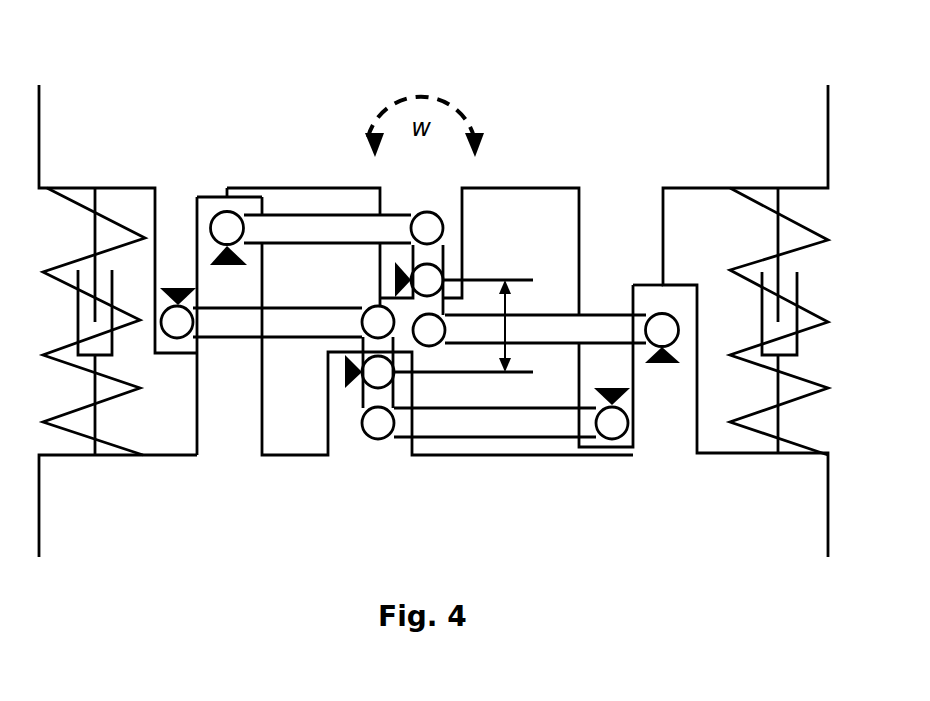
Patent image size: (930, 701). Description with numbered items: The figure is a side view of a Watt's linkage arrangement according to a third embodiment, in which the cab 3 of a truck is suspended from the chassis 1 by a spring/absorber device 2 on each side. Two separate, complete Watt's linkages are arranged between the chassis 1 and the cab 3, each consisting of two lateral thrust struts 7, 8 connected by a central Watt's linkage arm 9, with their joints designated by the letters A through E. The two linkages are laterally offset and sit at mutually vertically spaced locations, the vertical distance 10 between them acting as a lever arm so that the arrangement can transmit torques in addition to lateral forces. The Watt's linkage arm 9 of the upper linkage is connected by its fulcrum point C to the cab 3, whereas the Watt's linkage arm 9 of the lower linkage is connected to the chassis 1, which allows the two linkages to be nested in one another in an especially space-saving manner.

The chassis 1 is at (622, 514).
The spring/absorber device 2 is at (91, 484).
The cab 3 is at (171, 146).
The lateral thrust strut 7 is at (318, 226).
The lateral thrust strut 8 is at (556, 330).
The Watt's linkage arm 9 is at (431, 253).
The vertical distance 10 is at (518, 326).